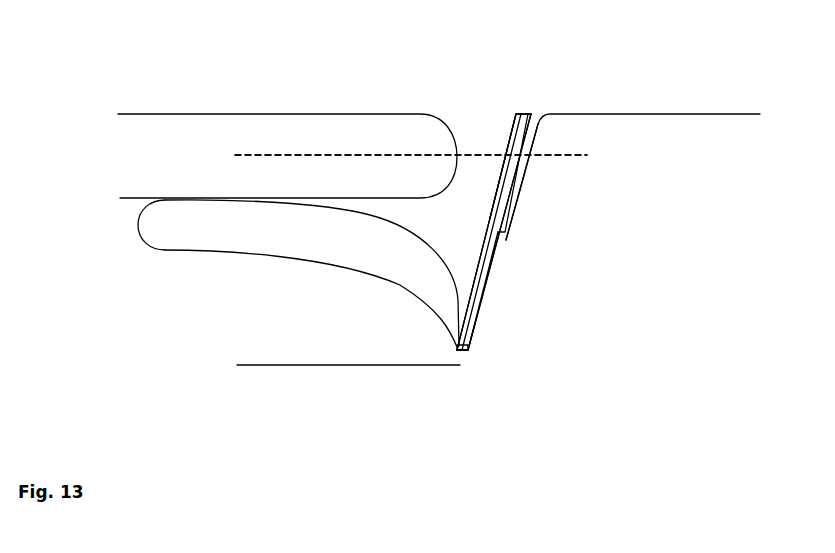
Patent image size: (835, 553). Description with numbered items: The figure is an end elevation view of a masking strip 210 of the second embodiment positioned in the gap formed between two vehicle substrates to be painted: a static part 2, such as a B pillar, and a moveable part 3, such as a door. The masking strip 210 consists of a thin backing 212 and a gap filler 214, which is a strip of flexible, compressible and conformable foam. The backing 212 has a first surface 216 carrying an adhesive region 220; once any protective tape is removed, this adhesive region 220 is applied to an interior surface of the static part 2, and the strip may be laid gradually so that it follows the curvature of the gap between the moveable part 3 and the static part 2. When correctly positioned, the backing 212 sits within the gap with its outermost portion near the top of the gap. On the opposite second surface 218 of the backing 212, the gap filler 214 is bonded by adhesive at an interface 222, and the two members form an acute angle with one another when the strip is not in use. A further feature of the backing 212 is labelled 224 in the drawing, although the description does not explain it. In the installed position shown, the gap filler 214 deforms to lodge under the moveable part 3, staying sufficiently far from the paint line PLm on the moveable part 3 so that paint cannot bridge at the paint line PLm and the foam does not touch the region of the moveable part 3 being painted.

The static part 2 is at (689, 262).
The moveable part 3 is at (137, 164).
The paint line PLm is at (460, 158).
The masking strip 210 is at (520, 343).
The backing 212 is at (527, 115).
The gap filler 214 is at (292, 238).
The first surface 216 is at (509, 200).
The second surface 218 is at (510, 143).
The adhesive region 220 is at (487, 287).
The interface 222 is at (460, 366).
The edge 224 is at (508, 152).